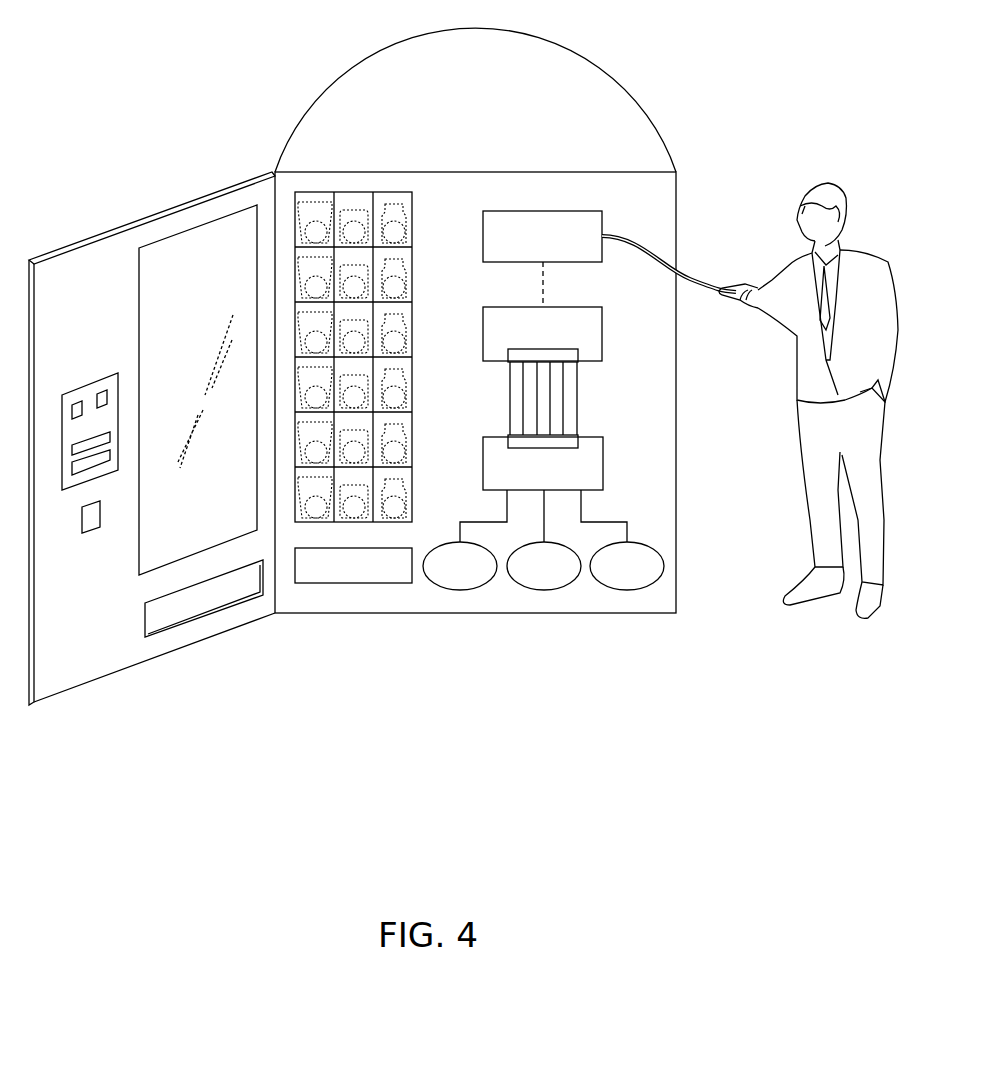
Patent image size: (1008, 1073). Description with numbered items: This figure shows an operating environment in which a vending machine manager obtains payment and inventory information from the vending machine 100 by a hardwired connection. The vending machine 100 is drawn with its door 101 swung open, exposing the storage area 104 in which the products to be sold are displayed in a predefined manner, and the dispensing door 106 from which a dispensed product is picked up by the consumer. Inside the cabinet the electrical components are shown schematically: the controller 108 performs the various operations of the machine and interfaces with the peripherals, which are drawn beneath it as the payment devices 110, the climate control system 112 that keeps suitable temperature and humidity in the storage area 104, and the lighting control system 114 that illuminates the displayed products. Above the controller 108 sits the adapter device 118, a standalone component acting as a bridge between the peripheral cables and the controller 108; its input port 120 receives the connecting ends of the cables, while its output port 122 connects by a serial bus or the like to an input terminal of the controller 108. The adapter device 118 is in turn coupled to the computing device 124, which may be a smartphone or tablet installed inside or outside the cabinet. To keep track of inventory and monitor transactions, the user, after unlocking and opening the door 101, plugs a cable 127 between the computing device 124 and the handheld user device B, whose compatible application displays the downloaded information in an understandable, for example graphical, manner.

The vending machine 100 is at (618, 73).
The door 101 is at (130, 220).
The storage area 104 is at (311, 200).
The dispensing door 106 is at (360, 570).
The controller 108 is at (562, 480).
The payment devices 110 is at (479, 578).
The climate control system 112 is at (563, 578).
The lighting control system 114 is at (646, 578).
The adapter device 118 is at (562, 342).
The input port 120 is at (508, 353).
The output port 122 is at (578, 443).
The computing device 124 is at (562, 248).
The cable 127 is at (687, 268).
The user device B is at (728, 290).